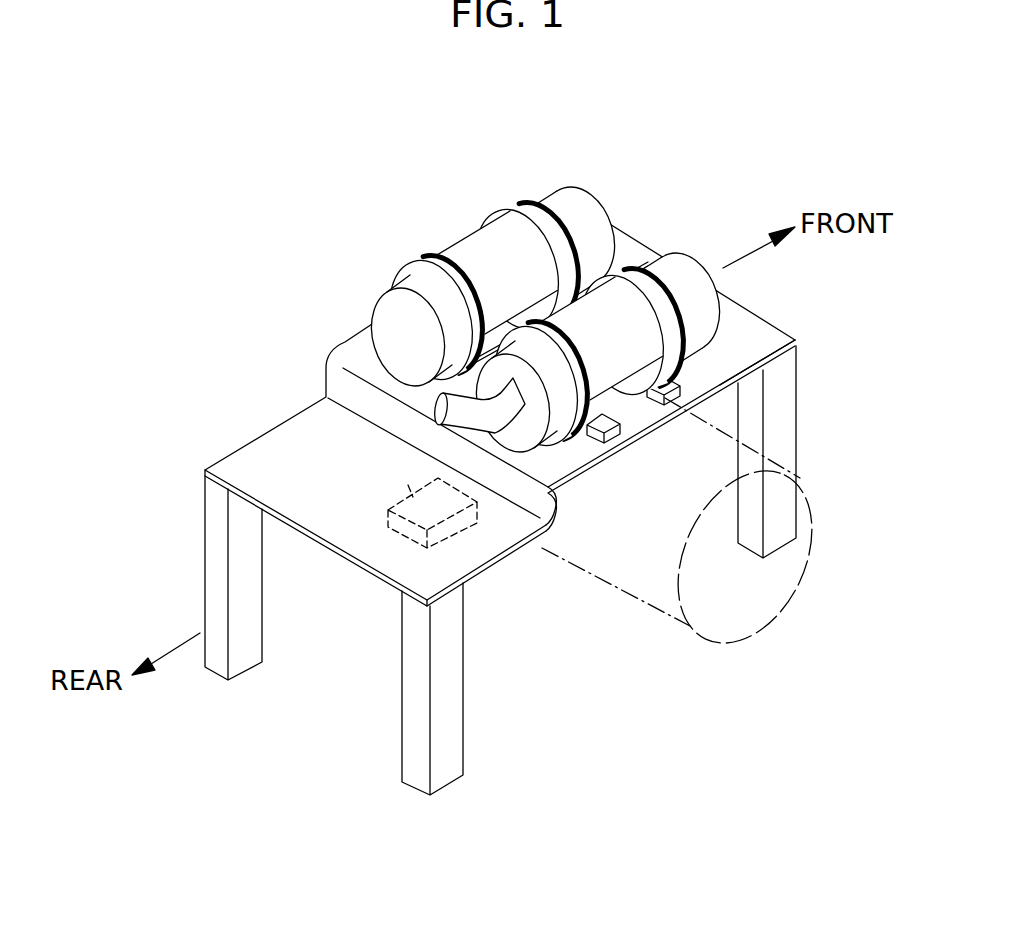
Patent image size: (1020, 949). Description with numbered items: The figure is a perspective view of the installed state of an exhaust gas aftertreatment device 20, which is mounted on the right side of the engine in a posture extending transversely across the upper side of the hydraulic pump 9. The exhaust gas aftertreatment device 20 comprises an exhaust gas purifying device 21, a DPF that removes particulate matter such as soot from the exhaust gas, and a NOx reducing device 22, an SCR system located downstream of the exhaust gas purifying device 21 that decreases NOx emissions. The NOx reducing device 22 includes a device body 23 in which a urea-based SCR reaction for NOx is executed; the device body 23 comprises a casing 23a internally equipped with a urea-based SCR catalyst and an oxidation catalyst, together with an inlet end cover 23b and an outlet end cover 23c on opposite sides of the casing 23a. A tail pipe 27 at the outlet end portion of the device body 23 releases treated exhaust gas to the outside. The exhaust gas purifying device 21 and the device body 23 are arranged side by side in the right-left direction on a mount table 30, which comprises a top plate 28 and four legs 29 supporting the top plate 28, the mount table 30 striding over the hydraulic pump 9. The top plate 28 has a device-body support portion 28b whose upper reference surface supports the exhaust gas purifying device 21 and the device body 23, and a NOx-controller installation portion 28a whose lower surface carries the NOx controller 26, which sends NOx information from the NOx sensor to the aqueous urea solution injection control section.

The hydraulic pump 9 is at (622, 580).
The exhaust gas aftertreatment device 20 is at (545, 268).
The exhaust gas purifying device 21 is at (578, 176).
The NOx reducing device 22 is at (598, 309).
The device body 23 is at (596, 403).
The casing 23a is at (633, 383).
The inlet end cover 23b is at (685, 407).
The outlet end cover 23c is at (561, 424).
The NOx controller 26 is at (397, 477).
The tail pipe 27 is at (477, 423).
The top plate 28 is at (500, 401).
The NOx-controller installation portion 28a is at (278, 455).
The device-body support portion 28b is at (365, 332).
The leg 29 is at (800, 427).
The mount table 30 is at (752, 308).